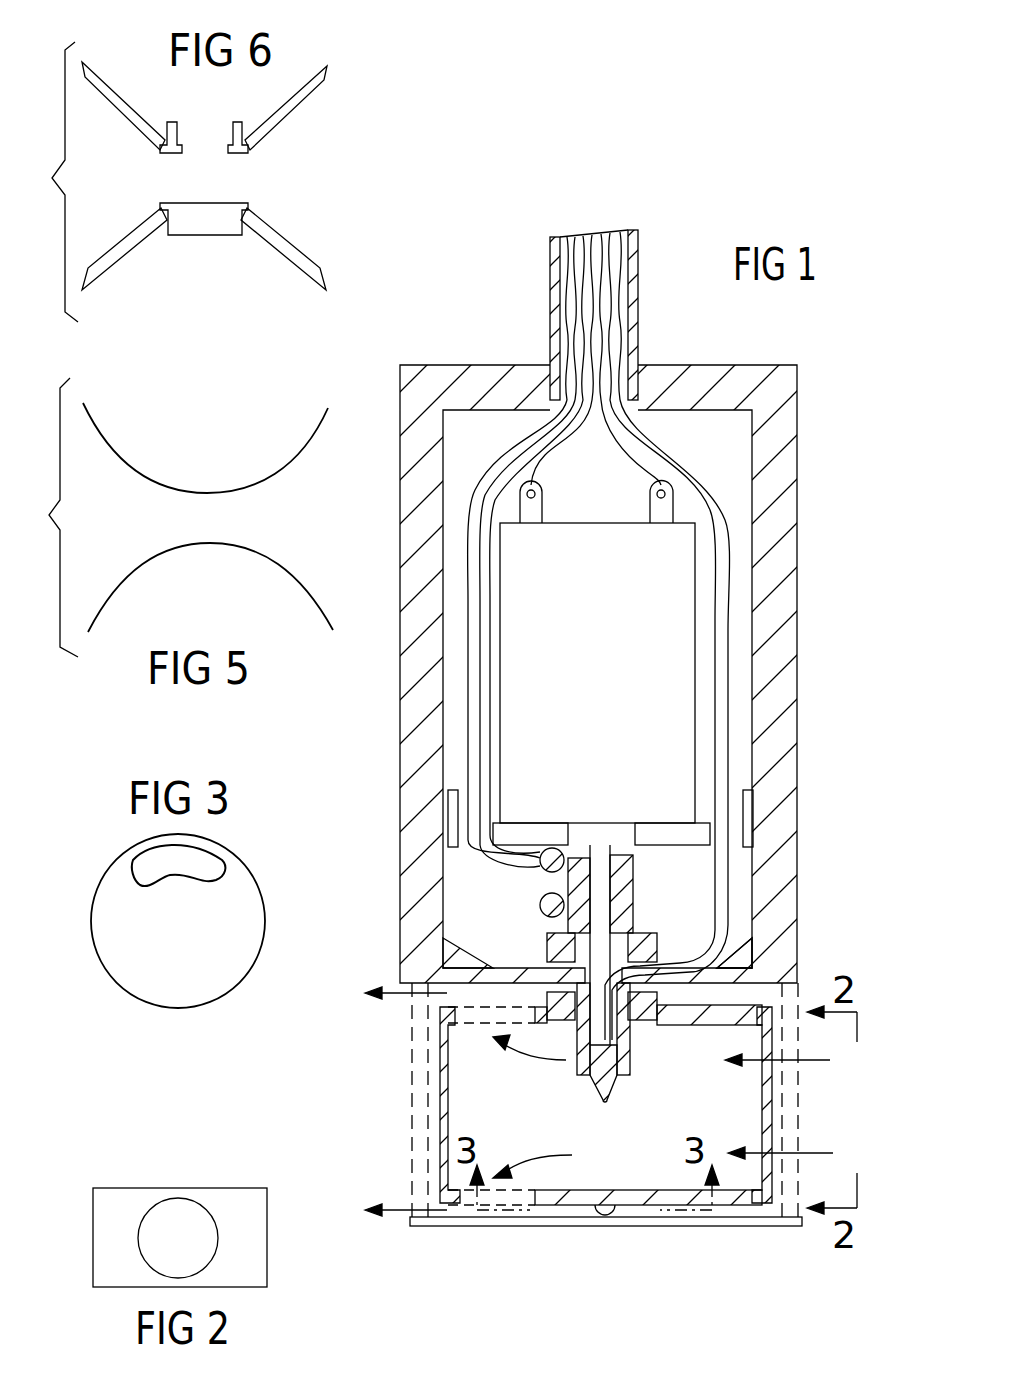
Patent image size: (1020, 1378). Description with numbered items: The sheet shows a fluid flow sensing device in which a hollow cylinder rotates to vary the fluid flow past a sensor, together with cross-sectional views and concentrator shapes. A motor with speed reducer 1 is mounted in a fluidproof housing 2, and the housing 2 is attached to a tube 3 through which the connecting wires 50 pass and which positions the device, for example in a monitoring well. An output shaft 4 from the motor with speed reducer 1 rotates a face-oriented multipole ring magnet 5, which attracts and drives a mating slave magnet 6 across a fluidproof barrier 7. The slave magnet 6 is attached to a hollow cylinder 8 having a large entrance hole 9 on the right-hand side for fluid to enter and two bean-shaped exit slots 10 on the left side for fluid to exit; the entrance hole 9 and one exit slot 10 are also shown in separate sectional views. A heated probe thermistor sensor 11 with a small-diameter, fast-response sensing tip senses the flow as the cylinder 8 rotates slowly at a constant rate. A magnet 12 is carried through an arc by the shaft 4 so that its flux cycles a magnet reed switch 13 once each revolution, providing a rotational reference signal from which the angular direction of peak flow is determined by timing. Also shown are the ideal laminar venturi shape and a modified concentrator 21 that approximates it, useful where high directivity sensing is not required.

In FIG. 1, the motor with speed reducer 1 is at (697, 590).
In FIG. 1, the fluidproof housing 2 is at (797, 465).
In FIG. 1, the tube 3 is at (638, 268).
In FIG. 1, the output shaft 4 is at (633, 905).
In FIG. 1, the face-oriented multipole ring magnet 5 is at (657, 945).
In FIG. 1, the slave magnet 6 is at (657, 997).
In FIG. 1, the fluidproof barrier 7 is at (758, 958).
In FIG. 1, the hollow cylinder 8 is at (742, 1205).
In FIG. 2, the large entrance hole 9 is at (218, 1222).
In FIG. 1, the large entrance hole 9 is at (768, 1042).
In FIG. 3, the bean-shaped exit slots 10 is at (133, 875).
In FIG. 1, the bean-shaped exit slots 10 is at (470, 1015).
In FIG. 1, the probe thermistor sensor 11 is at (608, 1100).
In FIG. 1, the magnet 12 is at (540, 905).
In FIG. 1, the magnet reed switch 13 is at (540, 866).
In FIG. 6, the modified concentrator 21 is at (122, 257).
In FIG. 1, the connecting wires 50 is at (583, 238).